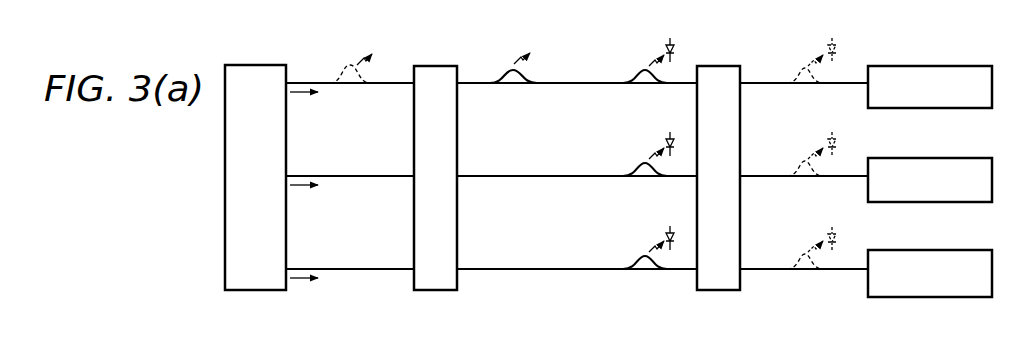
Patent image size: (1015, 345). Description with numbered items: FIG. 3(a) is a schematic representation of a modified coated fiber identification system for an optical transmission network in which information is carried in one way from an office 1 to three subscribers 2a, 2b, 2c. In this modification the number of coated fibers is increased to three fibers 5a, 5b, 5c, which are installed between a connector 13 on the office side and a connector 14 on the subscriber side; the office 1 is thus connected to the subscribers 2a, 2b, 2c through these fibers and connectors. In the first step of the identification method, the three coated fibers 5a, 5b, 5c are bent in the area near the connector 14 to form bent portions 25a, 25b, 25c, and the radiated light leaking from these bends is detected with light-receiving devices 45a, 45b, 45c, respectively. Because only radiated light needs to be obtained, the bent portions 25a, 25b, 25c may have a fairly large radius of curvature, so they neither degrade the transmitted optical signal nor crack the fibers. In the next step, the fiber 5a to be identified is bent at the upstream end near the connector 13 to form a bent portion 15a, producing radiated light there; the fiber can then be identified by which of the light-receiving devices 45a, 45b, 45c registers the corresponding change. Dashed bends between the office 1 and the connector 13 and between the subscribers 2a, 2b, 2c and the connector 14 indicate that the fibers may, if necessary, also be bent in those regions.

The office 1 is at (255, 64).
The connector 13 is at (437, 65).
The connector 14 is at (713, 65).
The coated fiber 5a is at (578, 82).
The coated fiber 5b is at (573, 175).
The coated fiber 5c is at (555, 268).
The bent portion 15a is at (513, 87).
The bent portion 25a is at (645, 88).
The bent portion 25b is at (640, 182).
The bent portion 25c is at (643, 275).
The light-receiving device 45a is at (665, 47).
The light-receiving device 45b is at (662, 142).
The light-receiving device 45c is at (663, 236).
The subscriber 2a is at (949, 66).
The subscriber 2b is at (950, 158).
The subscriber 2c is at (952, 250).